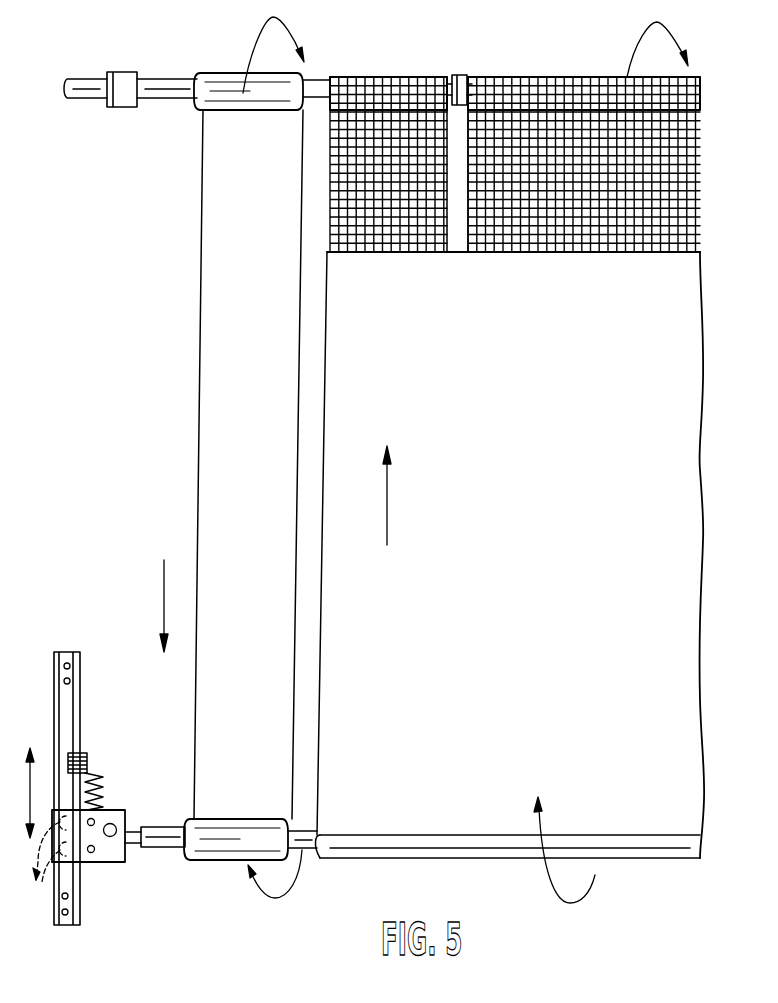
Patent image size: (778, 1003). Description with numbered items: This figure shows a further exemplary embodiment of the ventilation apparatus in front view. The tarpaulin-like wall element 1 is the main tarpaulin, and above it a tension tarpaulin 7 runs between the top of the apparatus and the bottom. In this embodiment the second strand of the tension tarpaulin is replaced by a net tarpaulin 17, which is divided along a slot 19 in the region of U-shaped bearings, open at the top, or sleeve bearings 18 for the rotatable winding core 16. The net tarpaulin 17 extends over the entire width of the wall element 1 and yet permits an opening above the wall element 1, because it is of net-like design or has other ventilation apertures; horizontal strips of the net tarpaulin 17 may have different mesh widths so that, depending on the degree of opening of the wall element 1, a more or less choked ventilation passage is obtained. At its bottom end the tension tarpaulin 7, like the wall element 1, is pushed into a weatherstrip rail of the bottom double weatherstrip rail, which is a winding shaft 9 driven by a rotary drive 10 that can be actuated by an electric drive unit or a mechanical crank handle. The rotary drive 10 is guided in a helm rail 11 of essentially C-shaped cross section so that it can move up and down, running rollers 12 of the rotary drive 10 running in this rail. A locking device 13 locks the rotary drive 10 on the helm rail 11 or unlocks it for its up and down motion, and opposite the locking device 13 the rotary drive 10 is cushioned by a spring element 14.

The tarpaulin-like wall element 1 is at (665, 677).
The tension tarpaulin 7 is at (213, 386).
The winding shaft 9 is at (172, 848).
The rotary drive 10 is at (108, 858).
The helm rail 11 is at (73, 652).
The running rollers 12 is at (39, 858).
The locking device 13 is at (82, 757).
The spring element 14 is at (100, 790).
The rotatable winding core 16 is at (170, 82).
The net tarpaulin 17 is at (548, 77).
The sleeve bearings 18 is at (118, 72).
The slot 19 is at (460, 232).